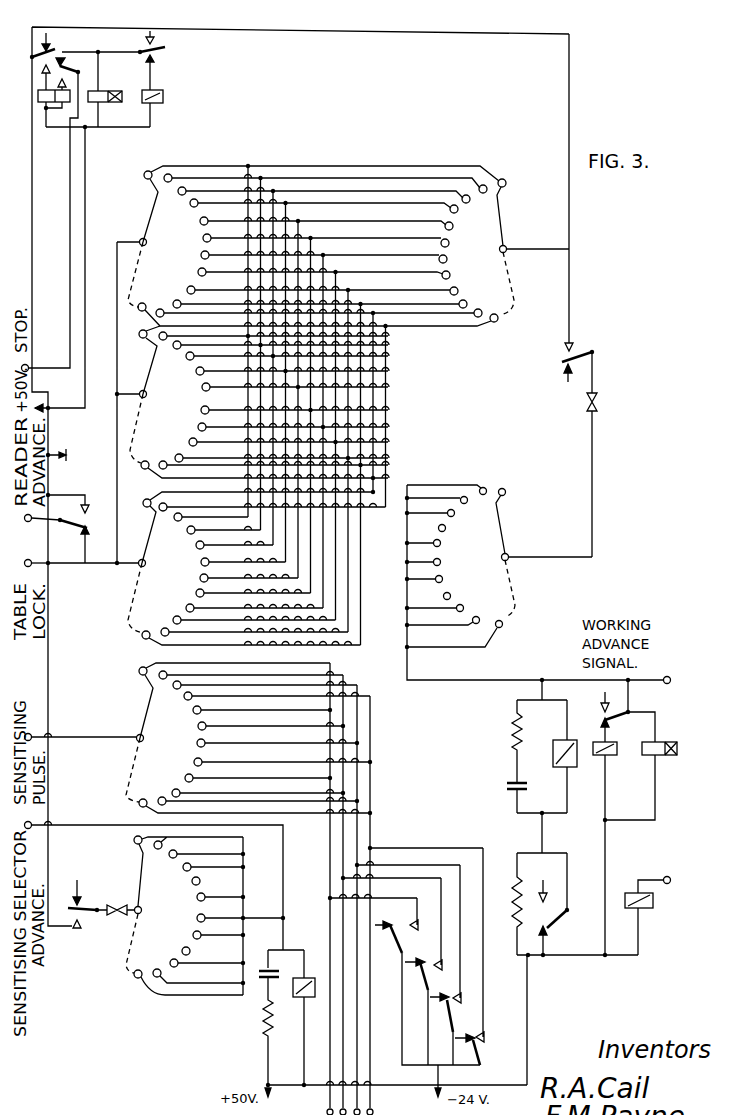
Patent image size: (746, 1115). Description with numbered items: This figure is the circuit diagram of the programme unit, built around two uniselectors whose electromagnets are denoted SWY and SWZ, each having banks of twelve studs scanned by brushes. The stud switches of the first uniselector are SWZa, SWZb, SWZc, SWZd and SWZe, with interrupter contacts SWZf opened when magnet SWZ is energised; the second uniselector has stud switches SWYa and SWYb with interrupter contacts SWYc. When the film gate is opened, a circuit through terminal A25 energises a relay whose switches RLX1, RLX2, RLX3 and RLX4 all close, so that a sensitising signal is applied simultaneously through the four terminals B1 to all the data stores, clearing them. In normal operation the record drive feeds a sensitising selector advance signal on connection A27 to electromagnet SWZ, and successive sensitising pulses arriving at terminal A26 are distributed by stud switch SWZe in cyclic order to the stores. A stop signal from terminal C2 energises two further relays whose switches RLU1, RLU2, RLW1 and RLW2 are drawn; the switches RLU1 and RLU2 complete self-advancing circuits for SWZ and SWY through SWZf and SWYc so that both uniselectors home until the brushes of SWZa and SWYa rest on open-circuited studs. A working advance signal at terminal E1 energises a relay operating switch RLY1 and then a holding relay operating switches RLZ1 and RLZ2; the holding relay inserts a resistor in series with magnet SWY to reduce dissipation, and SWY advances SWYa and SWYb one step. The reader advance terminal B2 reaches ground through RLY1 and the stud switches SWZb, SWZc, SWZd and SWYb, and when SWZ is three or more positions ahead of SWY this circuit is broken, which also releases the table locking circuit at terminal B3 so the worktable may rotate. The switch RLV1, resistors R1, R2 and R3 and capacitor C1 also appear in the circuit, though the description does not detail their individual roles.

The relay switch RLW2 is at (52, 52).
The relay switch RLV1 is at (62, 62).
The relay switch RLW1 is at (162, 51).
The relay switch RLU2 is at (171, 89).
The relay switch RLU1 is at (101, 897).
The relay switch RLY1 is at (608, 782).
The relay switch RLZ1 is at (651, 717).
The relay switch RLZ2 is at (663, 770).
The relay switch RLX1 is at (405, 940).
The relay switch RLX2 is at (430, 968).
The relay switch RLX3 is at (452, 1005).
The relay switch RLX4 is at (478, 1042).
The stud switch SWZa is at (205, 915).
The stud switch SWZb is at (313, 246).
The stud switch SWZc is at (259, 403).
The stud switch SWZd is at (257, 567).
The stud switch SWZe is at (249, 739).
The interrupter contacts SWZf is at (112, 916).
The stud switch SWYa is at (498, 567).
The stud switch SWYb is at (504, 250).
The interrupter contacts SWYc is at (616, 402).
The uniselector electromagnet SWY is at (553, 752).
The uniselector electromagnet SWZ is at (302, 997).
The resistor R1 is at (258, 1030).
The resistor R2 is at (503, 756).
The resistor R3 is at (512, 888).
The capacitor C1 is at (260, 982).
The terminal C2 is at (29, 365).
The reader advance terminal B2 is at (31, 522).
The table lock terminal B3 is at (31, 566).
The terminal A25 is at (680, 871).
The sensitising pulse terminal A26 is at (31, 740).
The sensitising selector advance terminal A27 is at (31, 828).
The working advance terminal E1 is at (682, 681).
The sensitising signal terminals B1 is at (373, 1112).